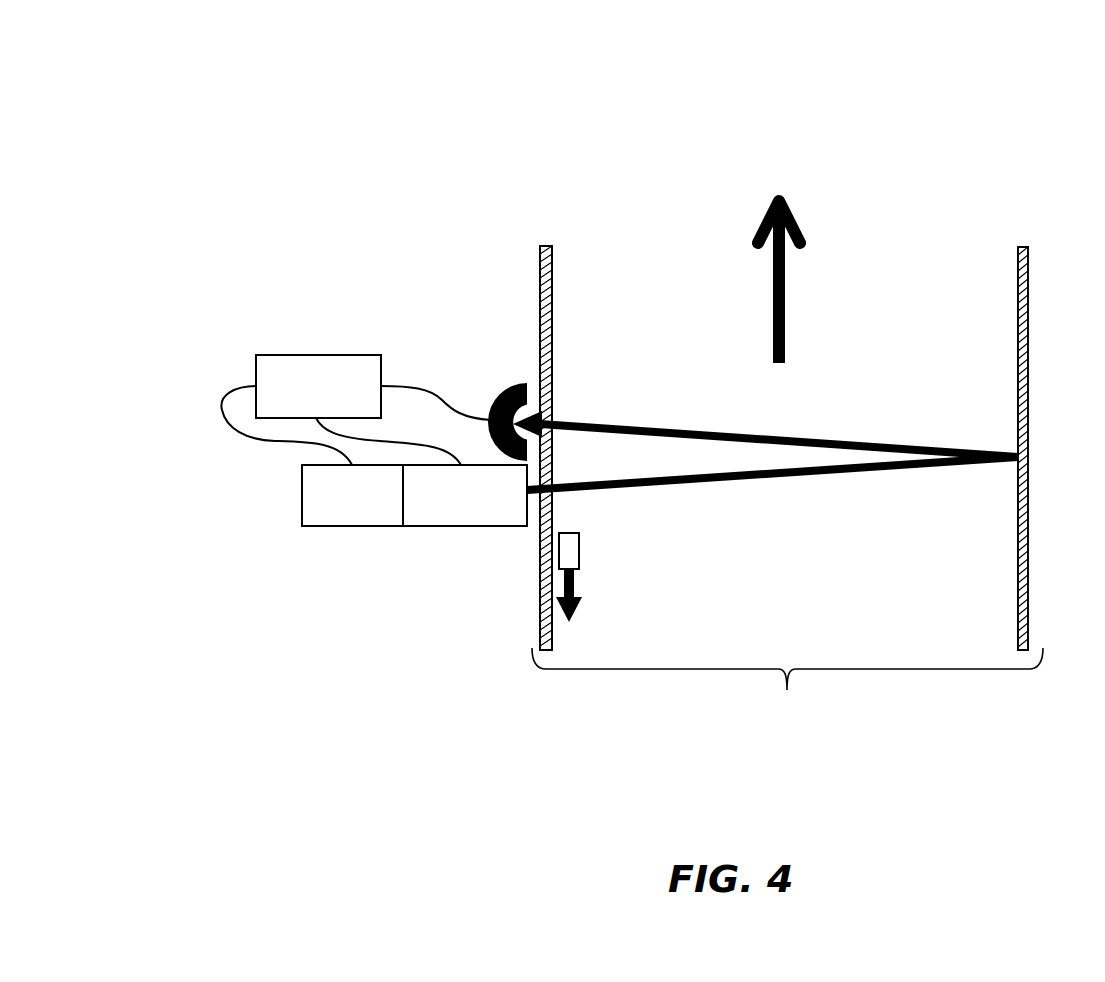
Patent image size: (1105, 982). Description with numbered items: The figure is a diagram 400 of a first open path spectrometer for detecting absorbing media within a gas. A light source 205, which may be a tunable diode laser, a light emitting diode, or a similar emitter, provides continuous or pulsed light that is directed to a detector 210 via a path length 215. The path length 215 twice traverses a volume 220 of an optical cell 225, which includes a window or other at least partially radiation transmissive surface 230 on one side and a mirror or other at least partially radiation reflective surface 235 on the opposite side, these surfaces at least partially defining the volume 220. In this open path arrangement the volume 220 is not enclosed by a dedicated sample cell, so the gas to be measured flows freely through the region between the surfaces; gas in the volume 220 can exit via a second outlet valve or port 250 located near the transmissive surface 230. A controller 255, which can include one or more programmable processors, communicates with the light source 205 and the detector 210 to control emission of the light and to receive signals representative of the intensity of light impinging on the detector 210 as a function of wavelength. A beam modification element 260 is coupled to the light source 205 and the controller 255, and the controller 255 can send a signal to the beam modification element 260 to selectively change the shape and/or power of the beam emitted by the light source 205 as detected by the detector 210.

The first open path spectrometer diagram 400 is at (248, 98).
The light source 205 is at (484, 511).
The detector 210 is at (503, 381).
The path length 215 is at (849, 457).
The volume 220 is at (762, 522).
The optical cell 225 is at (787, 686).
The at least partially radiation transmissive surface 230 is at (537, 529).
The at least partially radiation reflective surface 235 is at (1020, 243).
The second outlet valve or port 250 is at (553, 552).
The controller 255 is at (336, 401).
The beam modification element 260 is at (371, 511).